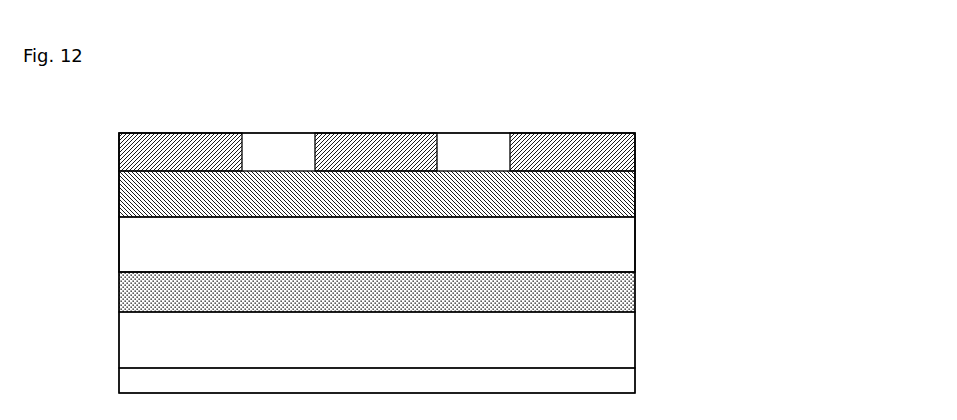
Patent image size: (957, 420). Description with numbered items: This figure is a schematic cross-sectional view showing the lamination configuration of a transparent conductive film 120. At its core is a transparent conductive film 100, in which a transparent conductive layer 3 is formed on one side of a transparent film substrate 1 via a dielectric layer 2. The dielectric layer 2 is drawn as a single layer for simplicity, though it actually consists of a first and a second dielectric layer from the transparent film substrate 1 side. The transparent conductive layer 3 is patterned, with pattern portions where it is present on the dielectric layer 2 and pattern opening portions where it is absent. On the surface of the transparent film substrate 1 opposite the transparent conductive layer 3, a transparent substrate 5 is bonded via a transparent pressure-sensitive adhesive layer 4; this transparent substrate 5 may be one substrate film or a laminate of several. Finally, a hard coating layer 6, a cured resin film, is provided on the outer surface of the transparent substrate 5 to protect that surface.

The transparent conductive film 120 is at (617, 124).
The transparent conductive film 100 is at (730, 142).
The transparent conductive layer 3 is at (625, 148).
The dielectric layer 2 is at (625, 190).
The transparent film substrate 1 is at (620, 236).
The transparent pressure-sensitive adhesive layer 4 is at (620, 289).
The transparent substrate 5 is at (620, 331).
The hard coating layer 6 is at (622, 381).